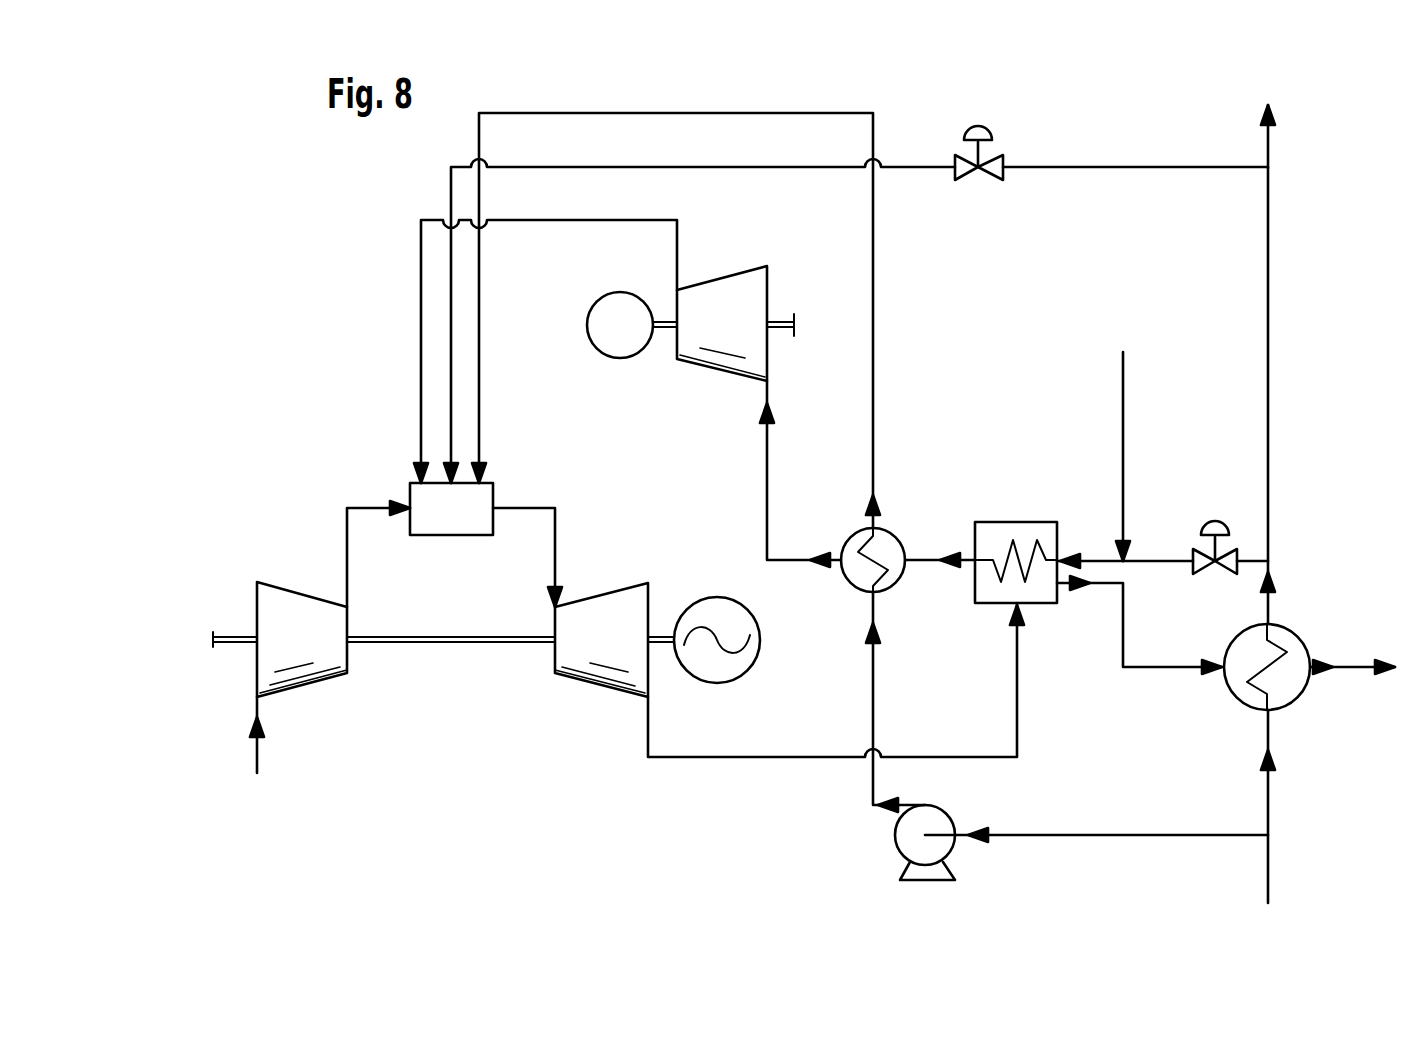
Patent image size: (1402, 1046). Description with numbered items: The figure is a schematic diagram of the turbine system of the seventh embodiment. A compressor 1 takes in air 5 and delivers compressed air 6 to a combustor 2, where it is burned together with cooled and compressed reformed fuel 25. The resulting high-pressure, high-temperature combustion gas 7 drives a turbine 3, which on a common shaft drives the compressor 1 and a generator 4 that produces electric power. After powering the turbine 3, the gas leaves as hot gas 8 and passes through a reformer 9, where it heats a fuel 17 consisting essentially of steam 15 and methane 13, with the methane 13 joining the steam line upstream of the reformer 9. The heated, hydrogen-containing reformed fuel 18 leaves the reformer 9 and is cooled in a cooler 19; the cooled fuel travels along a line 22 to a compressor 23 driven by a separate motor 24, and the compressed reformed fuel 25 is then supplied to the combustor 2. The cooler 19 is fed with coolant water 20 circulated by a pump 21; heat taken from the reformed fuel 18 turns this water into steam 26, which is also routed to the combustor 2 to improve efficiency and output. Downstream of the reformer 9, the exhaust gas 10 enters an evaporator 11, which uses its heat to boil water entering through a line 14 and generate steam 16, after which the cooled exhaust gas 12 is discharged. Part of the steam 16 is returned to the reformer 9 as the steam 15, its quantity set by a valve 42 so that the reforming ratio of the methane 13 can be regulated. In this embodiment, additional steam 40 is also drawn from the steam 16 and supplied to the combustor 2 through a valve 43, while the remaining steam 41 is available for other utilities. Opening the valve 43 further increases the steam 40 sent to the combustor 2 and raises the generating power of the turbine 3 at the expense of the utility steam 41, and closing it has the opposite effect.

The compressor 1 is at (302, 670).
The combustor 2 is at (451, 538).
The turbine 3 is at (601, 679).
The generator 4 is at (728, 671).
The air 5 is at (231, 763).
The compressed air 6 is at (343, 543).
The combustion gas 7 is at (552, 540).
The hot gas 8 is at (836, 730).
The reformer 9 is at (1016, 517).
The exhaust gas 10 is at (1139, 668).
The evaporator 11 is at (1287, 636).
The exhaust gas 12 is at (1352, 711).
The methane 13 is at (1157, 428).
The feed line 14 is at (1312, 806).
The steam 15 is at (1158, 506).
The steam 16 is at (1308, 396).
The fuel 17 is at (1090, 510).
The reformed fuel 18 is at (940, 509).
The cooler 19 is at (857, 521).
The water 20 is at (1096, 881).
The pump 21 is at (887, 736).
The line 22 is at (761, 474).
The compressor 23 is at (755, 302).
The motor 24 is at (605, 303).
The reformed fuel 25 is at (502, 351).
The steam 26 is at (679, 285).
The steam 40 is at (859, 281).
The steam 41 is at (1306, 132).
The valve 42 is at (1258, 521).
The valve 43 is at (987, 120).